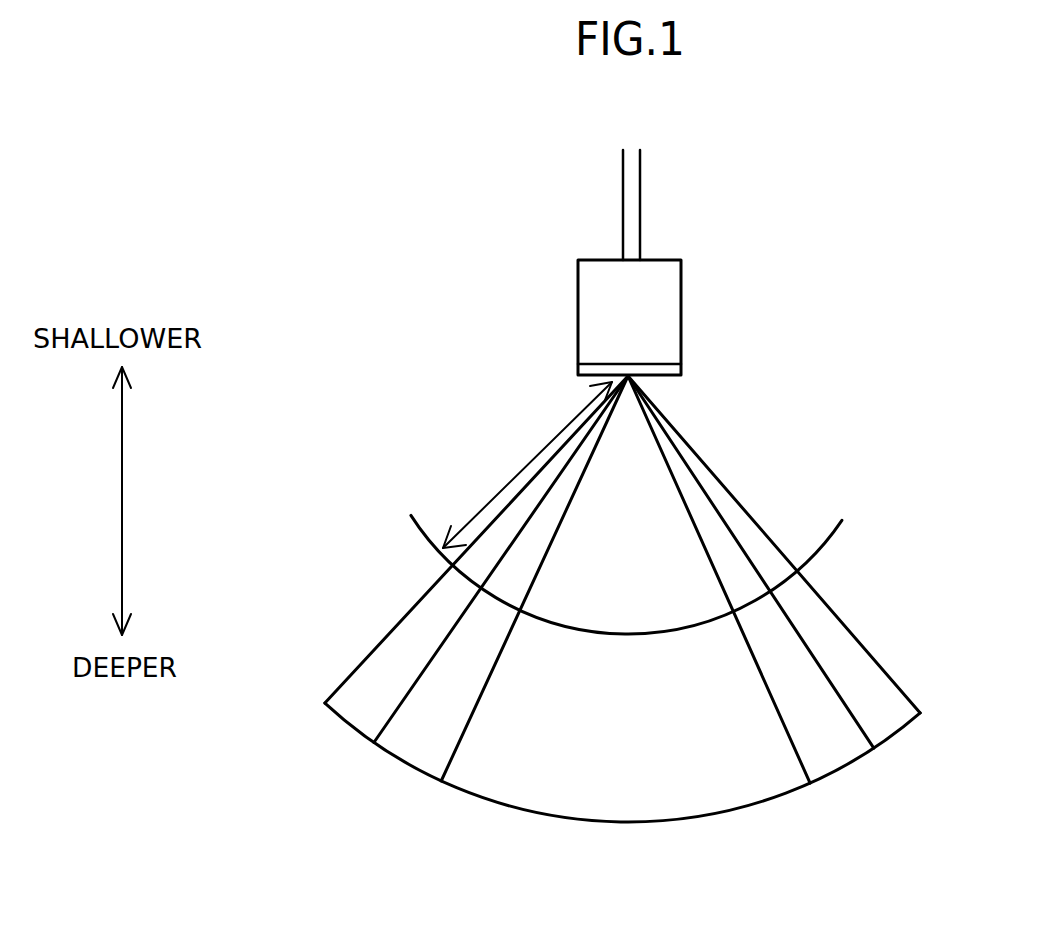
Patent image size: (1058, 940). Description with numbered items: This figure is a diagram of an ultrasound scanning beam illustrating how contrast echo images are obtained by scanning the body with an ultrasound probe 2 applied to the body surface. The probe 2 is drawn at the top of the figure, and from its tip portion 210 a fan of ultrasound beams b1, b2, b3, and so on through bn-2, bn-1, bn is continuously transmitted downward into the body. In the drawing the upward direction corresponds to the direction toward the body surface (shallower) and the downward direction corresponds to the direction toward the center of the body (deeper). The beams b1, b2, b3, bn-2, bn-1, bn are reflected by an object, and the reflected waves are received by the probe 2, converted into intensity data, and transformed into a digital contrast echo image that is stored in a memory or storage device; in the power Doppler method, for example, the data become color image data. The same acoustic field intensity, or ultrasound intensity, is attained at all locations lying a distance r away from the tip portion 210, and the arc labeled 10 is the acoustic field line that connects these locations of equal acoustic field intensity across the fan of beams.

The ultrasound probe 2 is at (681, 303).
The tip portion 210 is at (643, 378).
The acoustic field line 10 is at (645, 566).
The distance r is at (527, 465).
The ultrasound beam b1 is at (340, 682).
The ultrasound beam b2 is at (388, 713).
The ultrasound beam b3 is at (453, 748).
The ultrasound beam bn-2 is at (795, 748).
The ultrasound beam bn-1 is at (858, 727).
The ultrasound beam bn is at (903, 700).